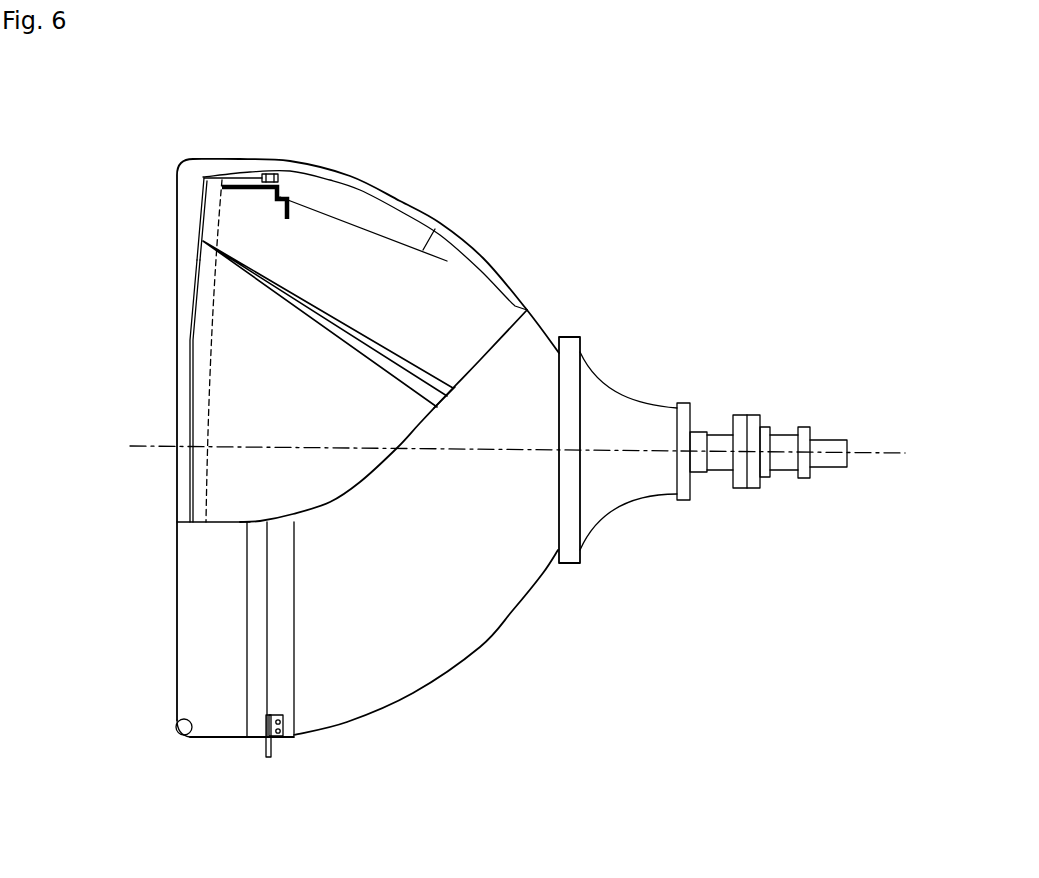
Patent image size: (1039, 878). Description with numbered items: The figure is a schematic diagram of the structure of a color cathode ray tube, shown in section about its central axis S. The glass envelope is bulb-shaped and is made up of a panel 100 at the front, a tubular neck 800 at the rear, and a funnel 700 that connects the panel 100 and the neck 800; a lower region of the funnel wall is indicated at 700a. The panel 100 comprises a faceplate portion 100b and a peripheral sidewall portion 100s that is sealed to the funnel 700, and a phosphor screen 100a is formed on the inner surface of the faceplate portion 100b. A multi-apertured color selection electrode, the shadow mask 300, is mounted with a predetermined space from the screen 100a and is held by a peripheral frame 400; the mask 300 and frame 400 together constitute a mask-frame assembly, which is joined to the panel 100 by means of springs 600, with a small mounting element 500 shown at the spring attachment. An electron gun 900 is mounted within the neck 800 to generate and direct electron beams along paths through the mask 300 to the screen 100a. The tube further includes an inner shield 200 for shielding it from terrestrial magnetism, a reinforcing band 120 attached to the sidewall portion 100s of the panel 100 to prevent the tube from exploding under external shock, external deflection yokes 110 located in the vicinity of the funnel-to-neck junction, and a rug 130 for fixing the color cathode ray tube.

The panel 100 is at (177, 622).
The phosphor screen 100a is at (198, 212).
The faceplate portion 100b is at (177, 345).
The peripheral sidewall portion 100s is at (176, 720).
The external deflection yokes 110 is at (623, 386).
The reinforcing band 120 is at (247, 673).
The rug 130 is at (263, 745).
The inner shield 200 is at (436, 229).
The shadow mask 300 is at (212, 268).
The peripheral frame 400 is at (290, 198).
The clip 500 is at (272, 174).
The springs 600 is at (262, 177).
The funnel 700 is at (375, 186).
The inner housing lower part 700a is at (267, 563).
The tubular neck 800 is at (747, 552).
The electron gun 900 is at (783, 470).
The rotation axis S is at (872, 450).